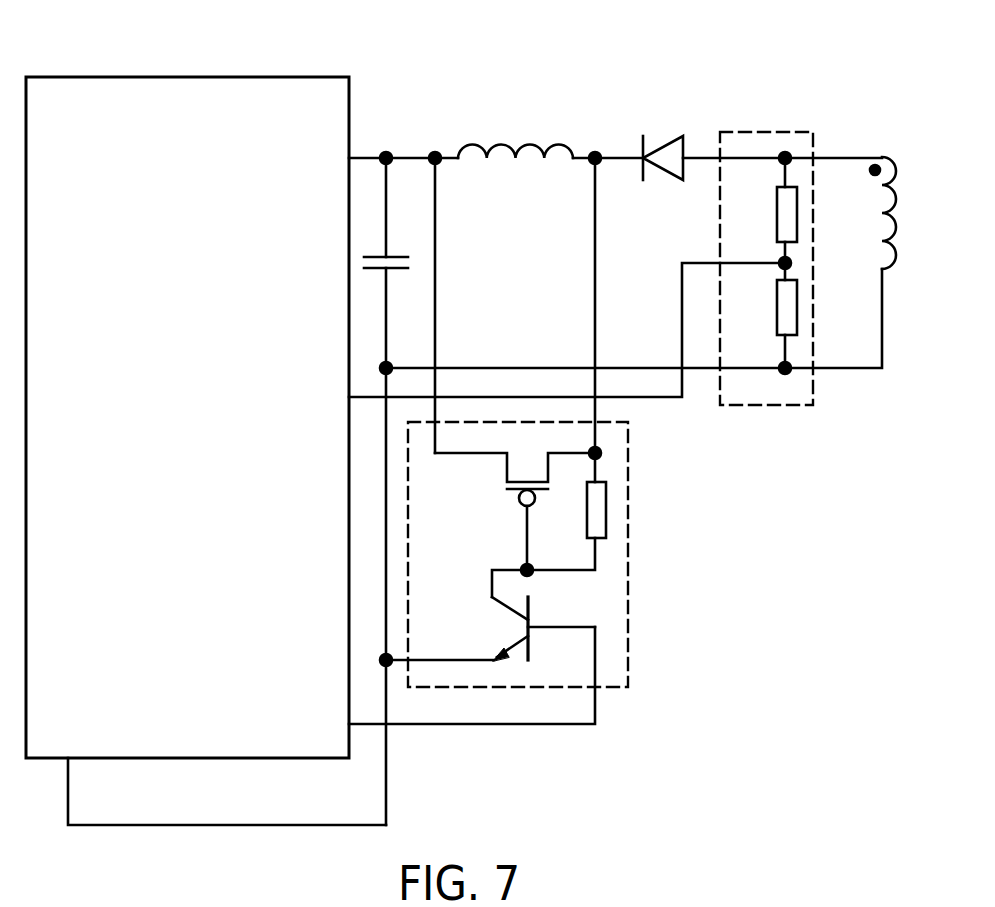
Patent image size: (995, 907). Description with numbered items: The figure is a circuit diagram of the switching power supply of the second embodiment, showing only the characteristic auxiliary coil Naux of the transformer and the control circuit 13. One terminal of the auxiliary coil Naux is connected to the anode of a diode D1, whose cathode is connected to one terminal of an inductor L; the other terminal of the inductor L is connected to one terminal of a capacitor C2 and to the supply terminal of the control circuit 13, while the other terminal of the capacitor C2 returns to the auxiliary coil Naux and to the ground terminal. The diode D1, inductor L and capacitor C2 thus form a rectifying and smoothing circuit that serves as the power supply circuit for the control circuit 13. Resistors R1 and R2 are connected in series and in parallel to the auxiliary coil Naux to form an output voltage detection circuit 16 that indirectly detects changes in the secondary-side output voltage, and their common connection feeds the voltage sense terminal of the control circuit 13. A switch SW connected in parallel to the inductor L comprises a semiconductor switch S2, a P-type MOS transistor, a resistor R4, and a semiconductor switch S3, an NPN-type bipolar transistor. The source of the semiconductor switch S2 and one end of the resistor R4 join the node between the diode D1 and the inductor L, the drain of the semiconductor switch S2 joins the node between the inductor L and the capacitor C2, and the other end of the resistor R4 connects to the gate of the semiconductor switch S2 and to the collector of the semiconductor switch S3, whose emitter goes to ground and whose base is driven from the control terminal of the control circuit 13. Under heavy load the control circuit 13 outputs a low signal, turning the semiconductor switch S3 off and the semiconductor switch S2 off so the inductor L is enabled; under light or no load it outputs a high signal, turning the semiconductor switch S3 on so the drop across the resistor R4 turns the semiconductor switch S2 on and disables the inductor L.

The control circuit 13 is at (182, 77).
The output voltage detection circuit 16 is at (766, 237).
The inductor L is at (515, 133).
The diode D1 is at (663, 142).
The capacitor C2 is at (393, 491).
The resistor R1 is at (768, 214).
The resistor R2 is at (768, 307).
The resistor R4 is at (566, 511).
The semiconductor switch S2 is at (515, 511).
The semiconductor switch S3 is at (543, 629).
The switch SW is at (554, 554).
The auxiliary coil Naux is at (840, 262).